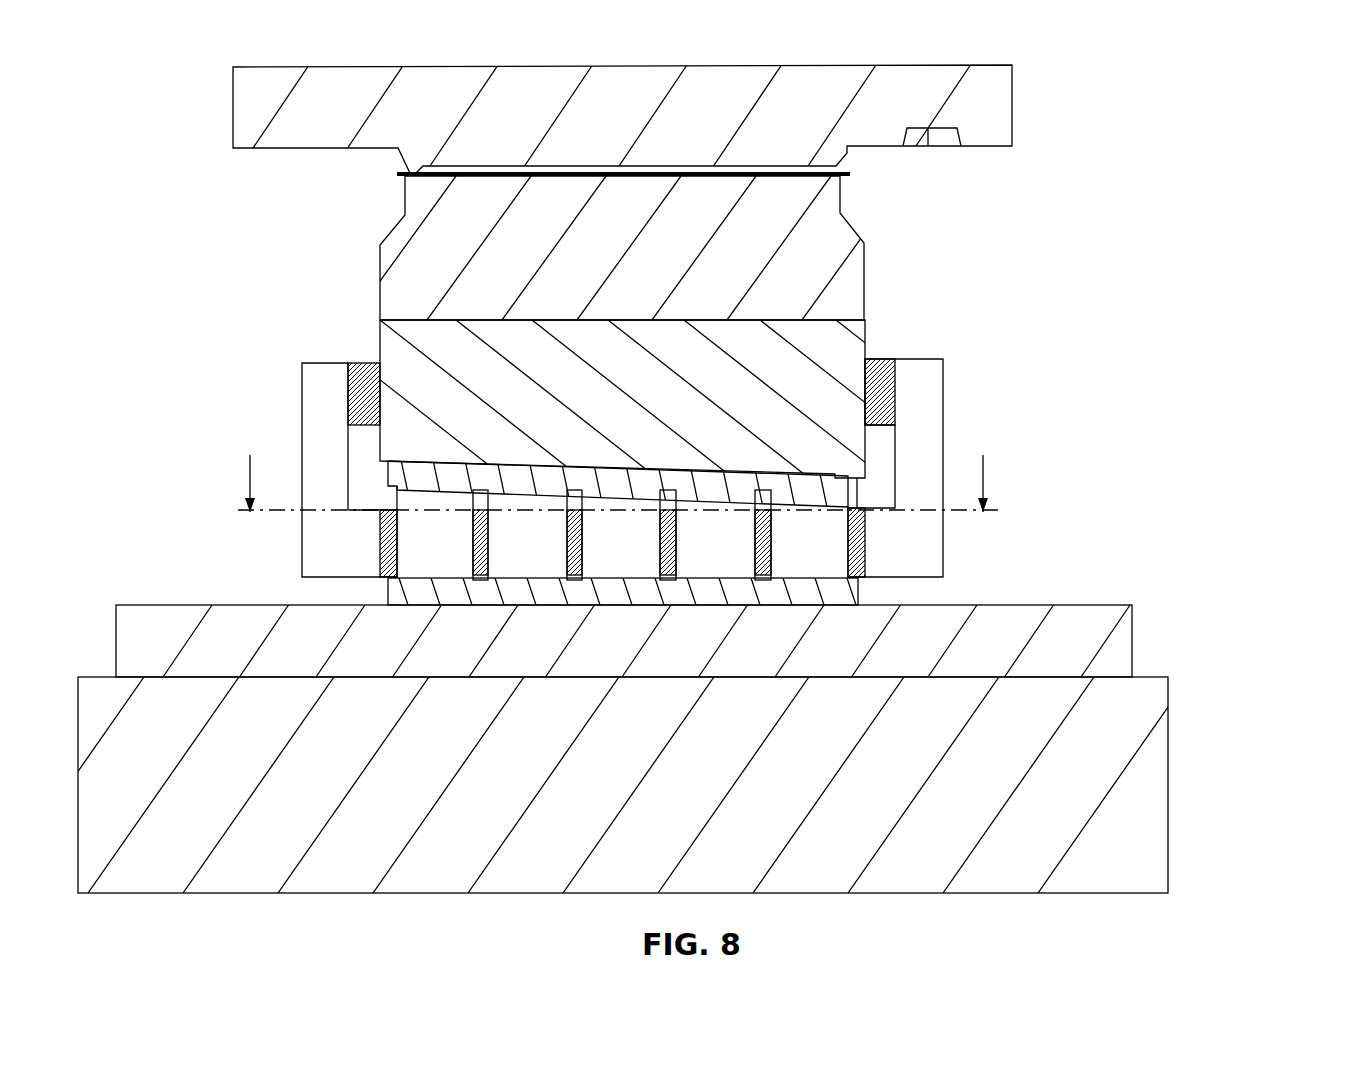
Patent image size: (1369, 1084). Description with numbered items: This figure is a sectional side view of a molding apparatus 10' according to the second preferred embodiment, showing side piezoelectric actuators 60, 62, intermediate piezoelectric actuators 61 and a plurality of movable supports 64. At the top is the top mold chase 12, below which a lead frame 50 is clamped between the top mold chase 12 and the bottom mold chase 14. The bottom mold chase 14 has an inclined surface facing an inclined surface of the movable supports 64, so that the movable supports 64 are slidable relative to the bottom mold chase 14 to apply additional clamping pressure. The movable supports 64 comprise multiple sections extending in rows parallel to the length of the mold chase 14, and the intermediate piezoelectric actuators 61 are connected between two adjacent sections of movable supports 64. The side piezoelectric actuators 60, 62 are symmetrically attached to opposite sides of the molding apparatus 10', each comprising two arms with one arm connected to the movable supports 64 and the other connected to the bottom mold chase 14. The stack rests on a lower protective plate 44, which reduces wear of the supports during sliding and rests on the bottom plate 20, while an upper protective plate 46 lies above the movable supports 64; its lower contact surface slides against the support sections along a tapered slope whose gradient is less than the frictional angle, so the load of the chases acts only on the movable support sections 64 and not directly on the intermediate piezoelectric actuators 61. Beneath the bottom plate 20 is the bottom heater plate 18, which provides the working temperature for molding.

The molding apparatus 10' is at (669, 471).
The top mold chase 12 is at (978, 108).
The bottom mold chase 14 is at (867, 342).
The bottom heater plate 18 is at (1160, 762).
The bottom plate 20 is at (1178, 635).
The lower protective plate 44 is at (388, 597).
The upper protective plate 46 is at (815, 490).
The lead frame 50 is at (850, 175).
The side piezoelectric actuator 60 is at (313, 400).
The intermediate piezoelectric actuator 61 is at (470, 547).
The side piezoelectric actuator 62 is at (922, 395).
The movable supports 64 is at (810, 548).